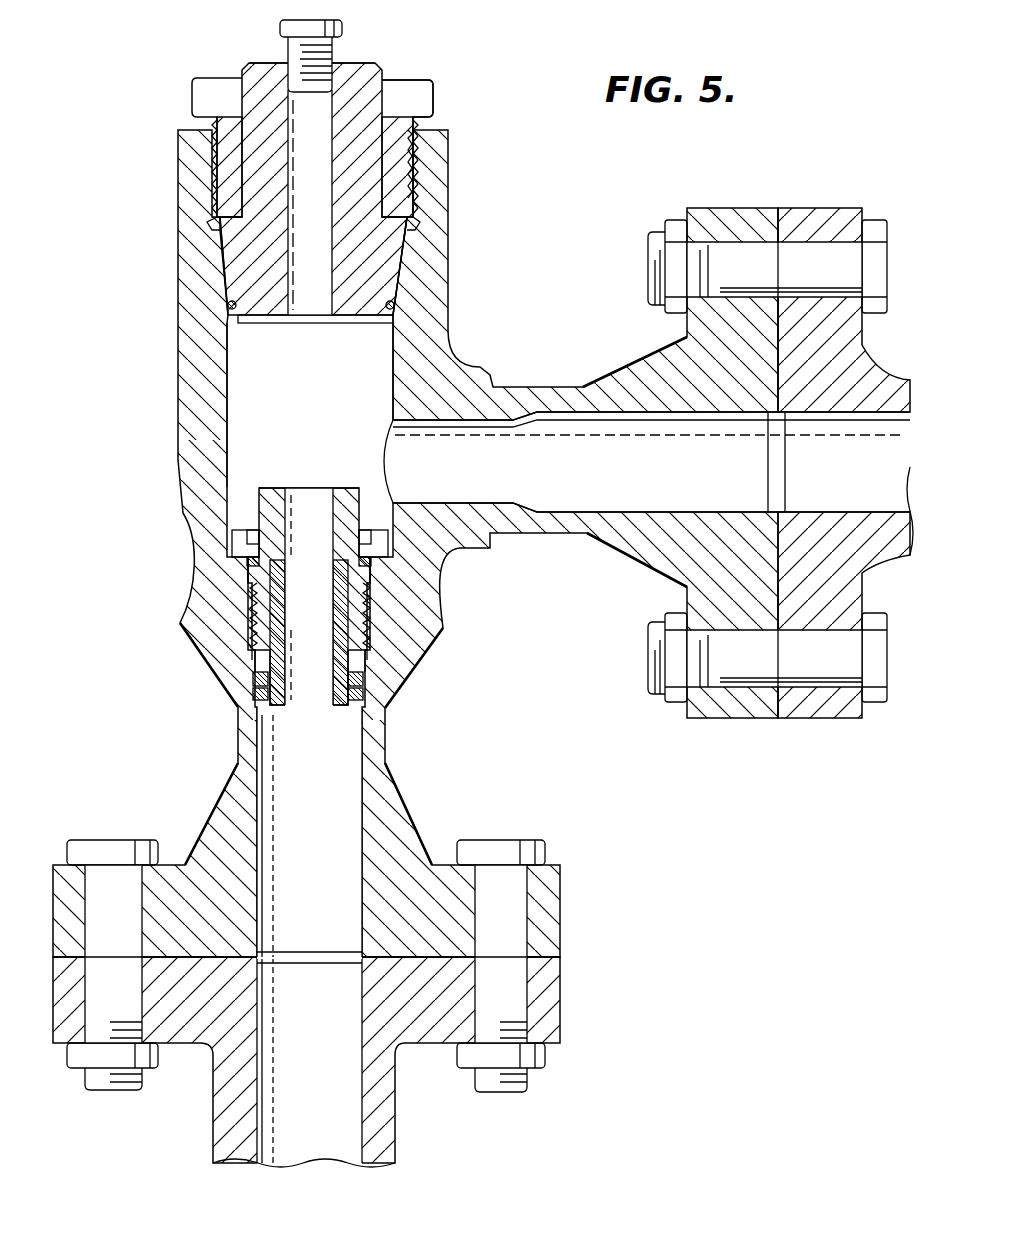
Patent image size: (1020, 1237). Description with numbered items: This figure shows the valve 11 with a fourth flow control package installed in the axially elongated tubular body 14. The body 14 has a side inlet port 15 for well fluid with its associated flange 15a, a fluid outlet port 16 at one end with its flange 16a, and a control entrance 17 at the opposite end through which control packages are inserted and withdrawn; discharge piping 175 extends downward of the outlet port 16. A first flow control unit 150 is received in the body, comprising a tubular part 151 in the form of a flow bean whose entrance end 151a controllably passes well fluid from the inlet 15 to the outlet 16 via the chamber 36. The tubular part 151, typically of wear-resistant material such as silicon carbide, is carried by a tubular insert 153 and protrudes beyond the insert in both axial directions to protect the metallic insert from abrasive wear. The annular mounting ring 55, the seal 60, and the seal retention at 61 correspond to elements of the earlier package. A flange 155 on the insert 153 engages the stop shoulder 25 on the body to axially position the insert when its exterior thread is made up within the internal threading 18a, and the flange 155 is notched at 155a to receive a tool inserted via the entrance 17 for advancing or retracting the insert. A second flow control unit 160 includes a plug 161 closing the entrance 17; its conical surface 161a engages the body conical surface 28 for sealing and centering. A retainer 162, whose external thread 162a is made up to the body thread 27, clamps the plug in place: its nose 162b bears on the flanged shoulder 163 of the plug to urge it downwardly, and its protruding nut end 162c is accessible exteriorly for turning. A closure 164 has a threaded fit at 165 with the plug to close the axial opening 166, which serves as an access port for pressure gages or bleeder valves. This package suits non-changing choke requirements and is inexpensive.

The inlet flange connection 11 is at (724, 197).
The tubular body 14 is at (190, 430).
The side inlet port 15 is at (647, 462).
The flange 15a is at (732, 710).
The fluid outlet port 16 is at (330, 830).
The flange 16a is at (550, 910).
The control entrance 17 is at (418, 148).
The internal threading 18a is at (250, 587).
The stop shoulder 25 is at (387, 537).
The body thread 27 is at (412, 187).
The body conical surface 28 is at (392, 255).
The chamber 36 is at (310, 405).
The annular mounting ring 55 is at (332, 538).
The seal 60 is at (355, 660).
The seal retainer 61 is at (356, 688).
The first flow control unit 150 is at (247, 626).
The tubular part 151 is at (259, 492).
The entrance end 151a is at (313, 488).
The tubular insert 153 is at (360, 613).
The flange 155 is at (232, 545).
The notch 155a is at (250, 540).
The second flow control unit 160 is at (219, 249).
The plug 161 is at (240, 280).
The conical surface 161a is at (403, 287).
The retainer 162 is at (168, 92).
The external thread 162a is at (217, 163).
The nose 162b is at (217, 242).
The nut end 162c is at (422, 93).
The flanged shoulder 163 is at (413, 213).
The closure 164 is at (323, 43).
The threaded fit 165 is at (288, 70).
The axial opening 166 is at (305, 300).
The discharge piping 175 is at (385, 1143).